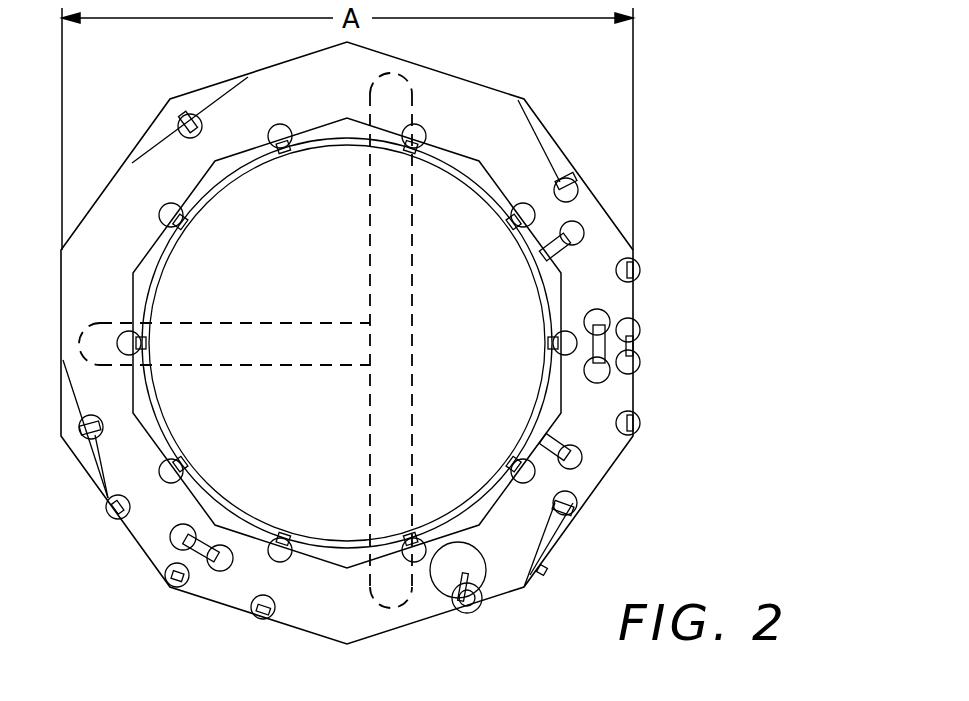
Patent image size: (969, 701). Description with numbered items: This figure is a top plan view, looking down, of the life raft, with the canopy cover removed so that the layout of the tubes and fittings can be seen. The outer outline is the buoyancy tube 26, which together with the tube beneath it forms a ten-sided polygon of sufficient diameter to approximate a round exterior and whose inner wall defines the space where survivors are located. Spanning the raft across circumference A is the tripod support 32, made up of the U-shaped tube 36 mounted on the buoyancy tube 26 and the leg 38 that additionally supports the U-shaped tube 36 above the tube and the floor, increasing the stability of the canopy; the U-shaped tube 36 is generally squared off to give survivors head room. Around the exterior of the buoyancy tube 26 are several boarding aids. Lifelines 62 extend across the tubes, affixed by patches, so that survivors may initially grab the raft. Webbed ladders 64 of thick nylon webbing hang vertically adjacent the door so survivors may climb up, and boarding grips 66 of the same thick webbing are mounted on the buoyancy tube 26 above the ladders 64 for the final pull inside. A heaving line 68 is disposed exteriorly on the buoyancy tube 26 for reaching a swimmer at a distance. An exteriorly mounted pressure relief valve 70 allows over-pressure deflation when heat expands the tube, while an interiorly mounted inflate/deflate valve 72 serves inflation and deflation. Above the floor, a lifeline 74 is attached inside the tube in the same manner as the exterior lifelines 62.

The buoyancy tube 26 is at (487, 104).
The tripod support 32 is at (358, 374).
The U-shaped tube 36 is at (388, 168).
The leg 38 is at (185, 352).
The lifeline 62 is at (215, 102).
The webbed ladder 64 is at (186, 108).
The boarding grip 66 is at (560, 253).
The heaving line 68 is at (470, 607).
The pressure relief valve 70 is at (548, 572).
The inflate/deflate valve 72 is at (478, 493).
The lifeline 74 is at (533, 408).